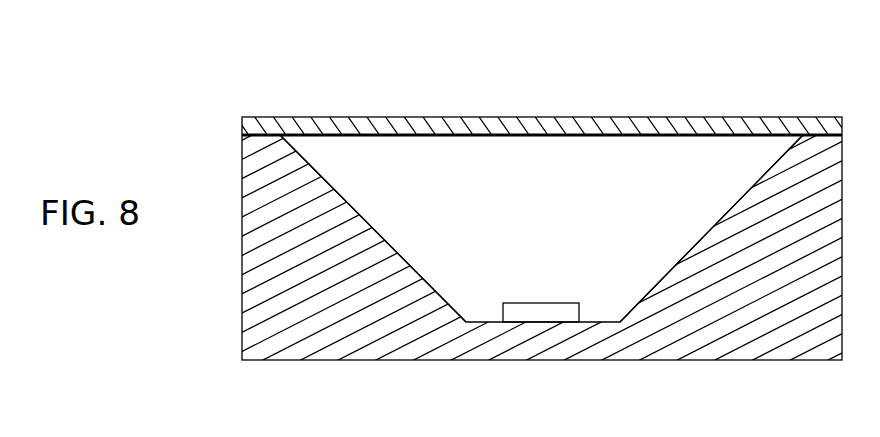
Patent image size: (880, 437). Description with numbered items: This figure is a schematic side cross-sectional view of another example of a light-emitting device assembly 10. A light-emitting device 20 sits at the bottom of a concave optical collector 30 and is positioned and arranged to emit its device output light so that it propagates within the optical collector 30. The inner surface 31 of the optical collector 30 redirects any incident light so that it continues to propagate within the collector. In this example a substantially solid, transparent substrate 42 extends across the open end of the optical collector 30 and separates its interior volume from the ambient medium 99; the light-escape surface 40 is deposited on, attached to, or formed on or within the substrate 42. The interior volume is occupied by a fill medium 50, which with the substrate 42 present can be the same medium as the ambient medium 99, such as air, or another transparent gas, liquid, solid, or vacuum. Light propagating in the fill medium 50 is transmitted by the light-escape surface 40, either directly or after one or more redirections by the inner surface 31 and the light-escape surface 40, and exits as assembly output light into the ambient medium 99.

The light-emitting device assembly 10 is at (440, 224).
The light-emitting device 20 is at (535, 313).
The optical collector 30 is at (600, 185).
The inner surface of the optical collector 31 is at (366, 222).
The light-escape surface 40 is at (542, 137).
The substrate 42 is at (515, 130).
The fill medium 50 is at (510, 240).
The ambient medium 99 is at (595, 66).